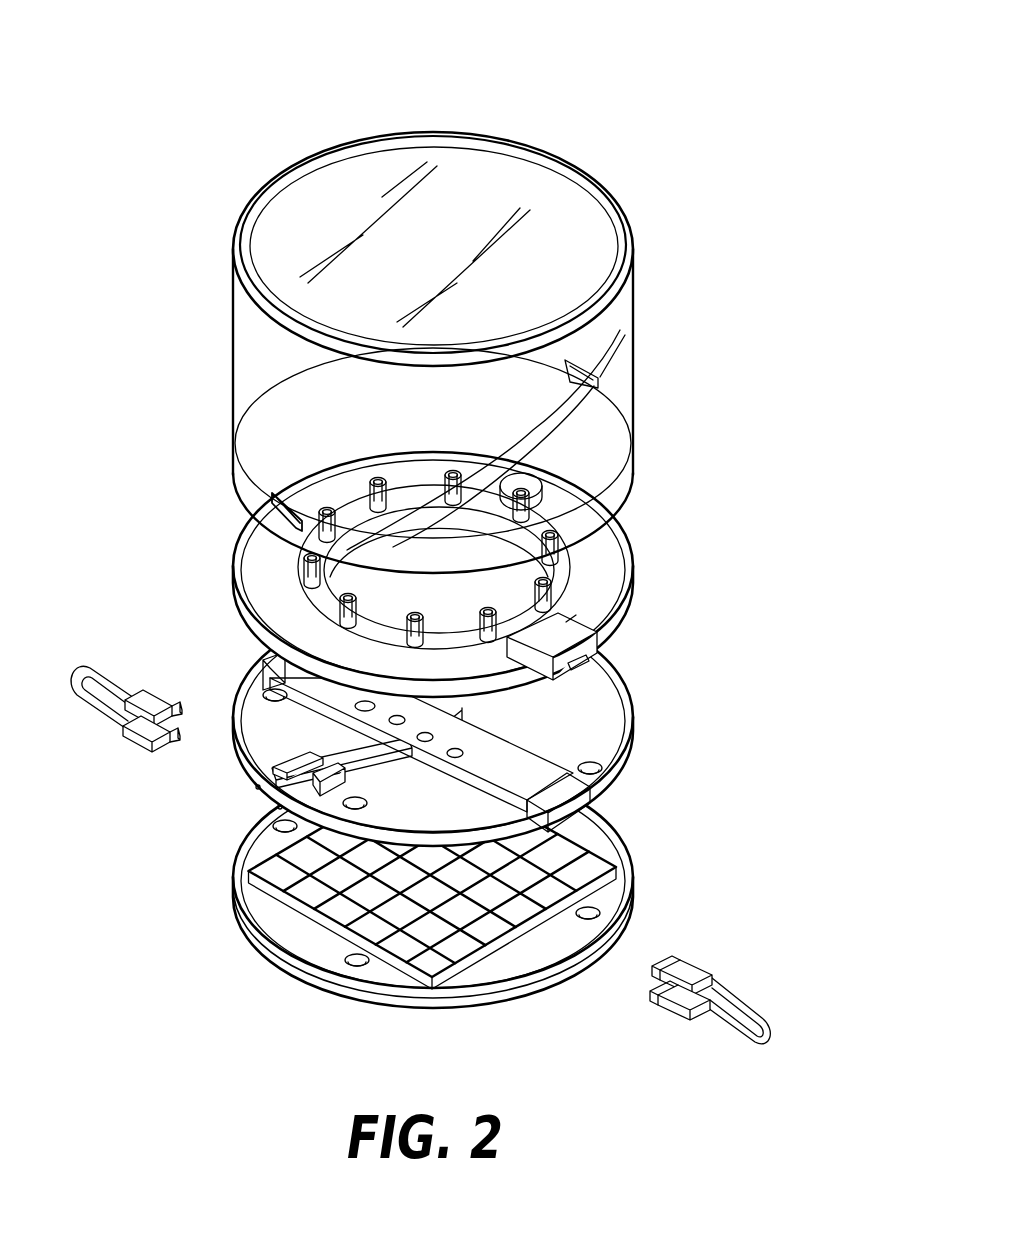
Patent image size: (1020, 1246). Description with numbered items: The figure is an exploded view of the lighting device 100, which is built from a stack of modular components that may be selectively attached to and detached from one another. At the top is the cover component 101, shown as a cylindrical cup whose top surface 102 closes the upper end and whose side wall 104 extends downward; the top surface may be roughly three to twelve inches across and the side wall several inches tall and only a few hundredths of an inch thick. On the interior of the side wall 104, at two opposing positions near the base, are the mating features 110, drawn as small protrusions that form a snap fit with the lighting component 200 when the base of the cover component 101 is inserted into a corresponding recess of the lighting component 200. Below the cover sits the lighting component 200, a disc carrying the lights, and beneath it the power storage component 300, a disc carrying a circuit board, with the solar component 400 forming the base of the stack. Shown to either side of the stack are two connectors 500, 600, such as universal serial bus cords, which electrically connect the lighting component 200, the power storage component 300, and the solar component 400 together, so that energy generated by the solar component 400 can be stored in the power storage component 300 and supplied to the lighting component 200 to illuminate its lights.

The lighting device 100 is at (757, 89).
The cover component 101 is at (540, 128).
The top surface 102 is at (547, 233).
The side wall 104 is at (633, 313).
The mating features 110 is at (275, 497).
The lighting component 200 is at (633, 577).
The power storage component 300 is at (632, 722).
The solar component 400 is at (632, 893).
The connector 500 is at (752, 1017).
The connector 600 is at (134, 750).